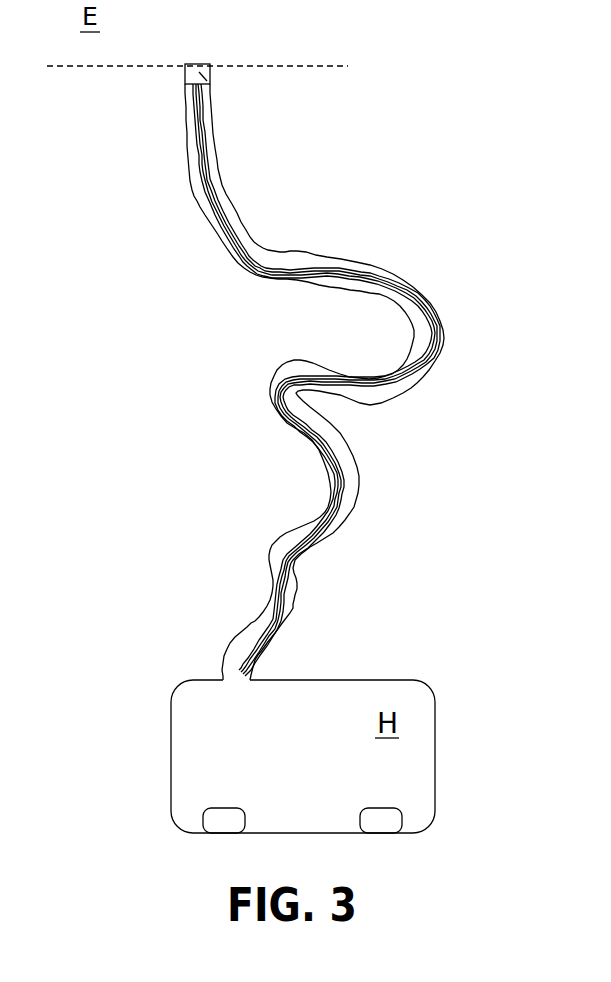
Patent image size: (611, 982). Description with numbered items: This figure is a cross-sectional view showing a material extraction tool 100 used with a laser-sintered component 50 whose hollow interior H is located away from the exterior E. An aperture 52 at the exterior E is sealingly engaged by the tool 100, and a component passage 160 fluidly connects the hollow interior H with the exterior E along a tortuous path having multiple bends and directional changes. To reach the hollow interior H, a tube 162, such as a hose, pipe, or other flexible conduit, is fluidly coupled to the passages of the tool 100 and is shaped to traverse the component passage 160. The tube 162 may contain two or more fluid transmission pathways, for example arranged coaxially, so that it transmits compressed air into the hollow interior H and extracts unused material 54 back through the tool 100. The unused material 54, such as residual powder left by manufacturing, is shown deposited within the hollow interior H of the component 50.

The aperture 52 is at (160, 92).
The material extraction tool 100 is at (213, 85).
The component 50 is at (297, 212).
The component passage 160 is at (417, 367).
The tube 162 is at (323, 268).
The unused material 54 is at (227, 822).